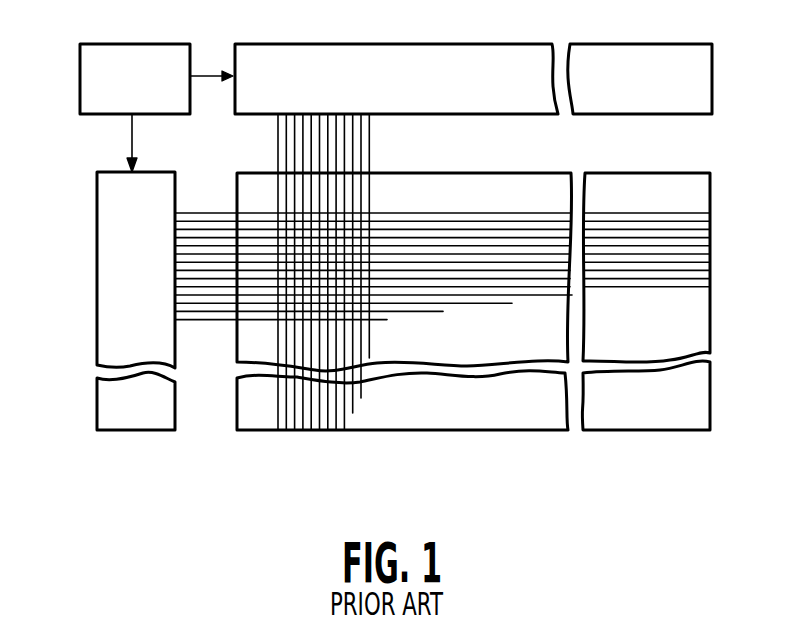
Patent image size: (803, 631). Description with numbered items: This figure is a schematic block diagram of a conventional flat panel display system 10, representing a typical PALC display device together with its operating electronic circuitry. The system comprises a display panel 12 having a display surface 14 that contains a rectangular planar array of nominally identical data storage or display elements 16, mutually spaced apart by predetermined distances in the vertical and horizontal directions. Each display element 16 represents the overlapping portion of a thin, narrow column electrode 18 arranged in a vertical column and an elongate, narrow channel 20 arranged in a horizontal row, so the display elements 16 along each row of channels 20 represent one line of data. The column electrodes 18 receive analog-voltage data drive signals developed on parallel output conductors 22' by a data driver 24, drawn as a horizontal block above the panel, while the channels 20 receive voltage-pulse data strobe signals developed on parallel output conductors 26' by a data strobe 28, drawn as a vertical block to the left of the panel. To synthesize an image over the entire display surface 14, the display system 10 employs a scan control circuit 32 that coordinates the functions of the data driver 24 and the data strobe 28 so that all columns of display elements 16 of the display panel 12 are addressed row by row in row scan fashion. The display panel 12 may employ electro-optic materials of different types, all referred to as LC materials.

The flat panel display system 10 is at (394, 452).
The display panel 12 is at (553, 440).
The display surface 14 is at (470, 420).
The display elements 16 is at (306, 215).
The column electrodes 18 is at (355, 346).
The channels 20 is at (477, 246).
The output conductors 22' is at (288, 143).
The data driver 24 is at (531, 44).
The output conductors 26' is at (206, 244).
The data strobe 28 is at (96, 208).
The scan control circuit 32 is at (80, 76).